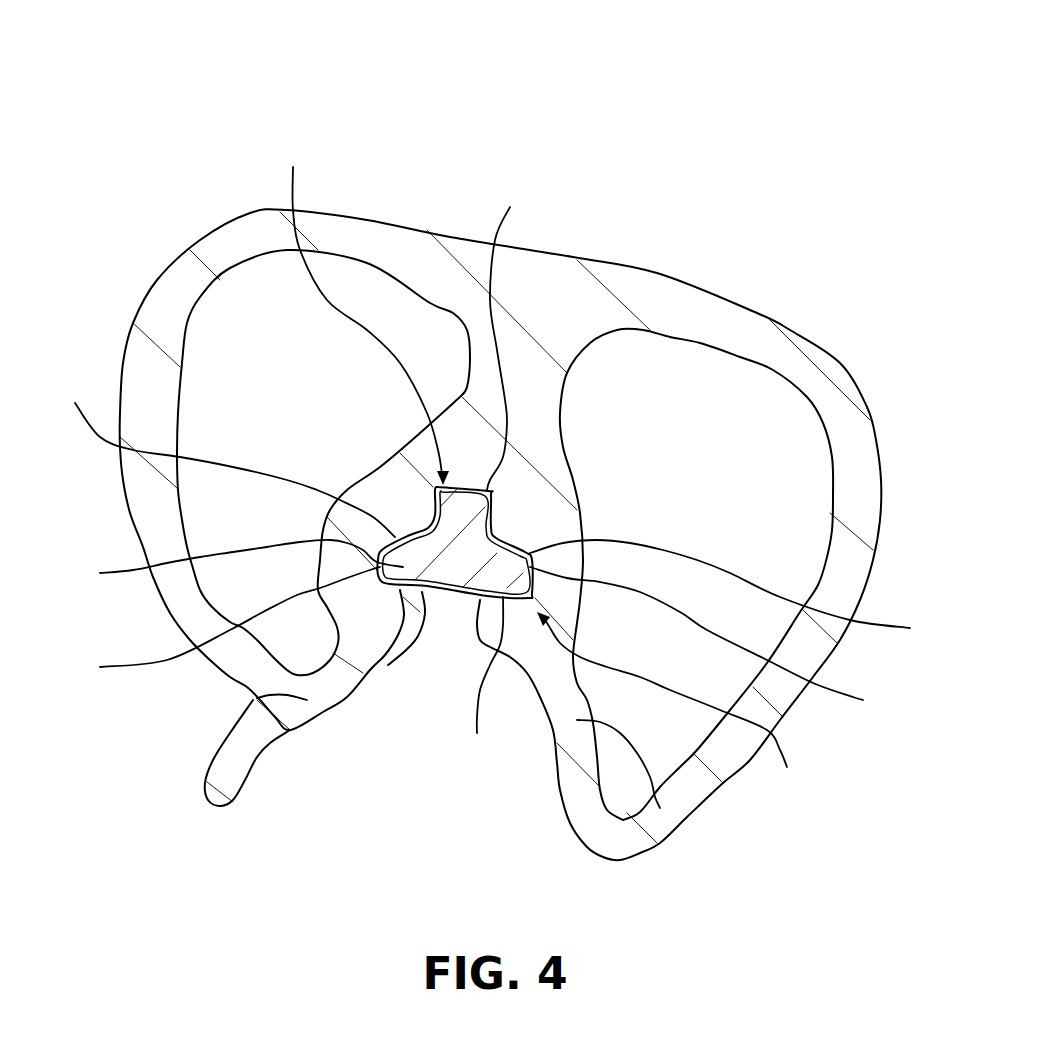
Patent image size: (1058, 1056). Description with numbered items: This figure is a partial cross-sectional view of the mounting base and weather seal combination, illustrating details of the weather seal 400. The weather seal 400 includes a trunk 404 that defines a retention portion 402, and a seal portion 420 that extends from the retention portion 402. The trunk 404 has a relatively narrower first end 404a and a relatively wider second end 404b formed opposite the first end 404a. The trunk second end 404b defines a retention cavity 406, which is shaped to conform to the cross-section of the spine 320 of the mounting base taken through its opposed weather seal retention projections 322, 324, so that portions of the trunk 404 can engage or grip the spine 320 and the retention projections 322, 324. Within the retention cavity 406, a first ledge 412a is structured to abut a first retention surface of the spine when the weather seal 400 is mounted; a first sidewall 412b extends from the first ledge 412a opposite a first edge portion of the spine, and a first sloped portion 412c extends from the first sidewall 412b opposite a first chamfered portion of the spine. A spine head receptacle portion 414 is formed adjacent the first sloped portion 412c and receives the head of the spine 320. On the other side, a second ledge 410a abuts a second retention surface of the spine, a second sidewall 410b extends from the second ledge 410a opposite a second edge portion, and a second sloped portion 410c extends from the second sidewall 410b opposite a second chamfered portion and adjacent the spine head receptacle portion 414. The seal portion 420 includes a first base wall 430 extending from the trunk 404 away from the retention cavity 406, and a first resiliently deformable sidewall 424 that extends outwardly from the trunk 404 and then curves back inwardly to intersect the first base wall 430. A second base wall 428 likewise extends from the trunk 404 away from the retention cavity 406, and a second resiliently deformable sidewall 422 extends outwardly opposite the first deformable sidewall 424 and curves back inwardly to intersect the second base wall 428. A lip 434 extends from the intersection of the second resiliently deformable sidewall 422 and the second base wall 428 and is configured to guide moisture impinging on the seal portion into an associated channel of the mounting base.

The weather seal 400 is at (568, 70).
The retention portion 402 is at (501, 563).
The trunk 404 is at (570, 535).
The first end 404a is at (585, 259).
The second end 404b is at (675, 696).
The retention cavity 406 is at (363, 310).
The second ledge 410a is at (383, 685).
The second sidewall 410b is at (223, 562).
The second sloped portion 410c is at (218, 456).
The first ledge 412a is at (477, 680).
The first sidewall 412b is at (725, 637).
The first sloped portion 412c is at (557, 416).
The spine head receptacle portion 414 is at (509, 335).
The seal portion 420 is at (693, 224).
The second resiliently deformable sidewall 422 is at (157, 183).
The first resiliently deformable sidewall 424 is at (882, 324).
The second base wall 428 is at (187, 729).
The first base wall 430 is at (675, 785).
The lip 434 is at (223, 797).
The spine 320 is at (454, 666).
The second weather seal retention projection 322 is at (215, 623).
The first weather seal retention projection 324 is at (741, 590).